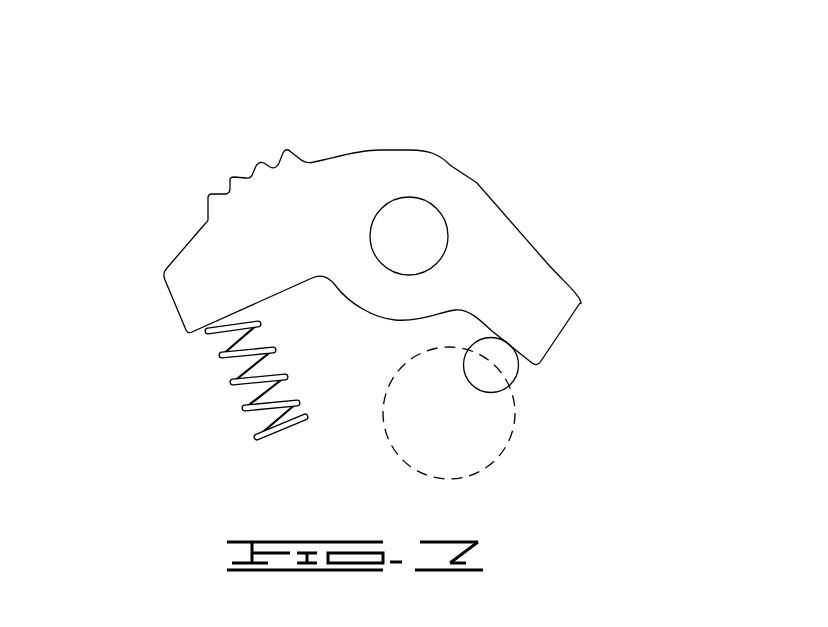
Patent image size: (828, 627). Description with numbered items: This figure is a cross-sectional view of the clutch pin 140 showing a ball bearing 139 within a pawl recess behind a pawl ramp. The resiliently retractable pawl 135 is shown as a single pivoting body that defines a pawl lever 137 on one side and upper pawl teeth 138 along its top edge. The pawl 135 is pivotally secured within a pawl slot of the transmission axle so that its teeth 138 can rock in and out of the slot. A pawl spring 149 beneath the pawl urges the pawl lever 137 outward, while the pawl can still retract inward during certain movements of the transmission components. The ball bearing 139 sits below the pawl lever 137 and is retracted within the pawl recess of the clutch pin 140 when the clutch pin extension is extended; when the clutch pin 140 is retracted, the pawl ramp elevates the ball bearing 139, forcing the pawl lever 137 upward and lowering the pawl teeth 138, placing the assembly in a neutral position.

The resiliently retractable pawl 135 is at (380, 150).
The pawl lever 137 is at (550, 263).
The upper pawl teeth 138 is at (230, 177).
The ball bearing 139 is at (517, 380).
The clutch pin 140 is at (497, 457).
The pawl spring 149 is at (233, 382).